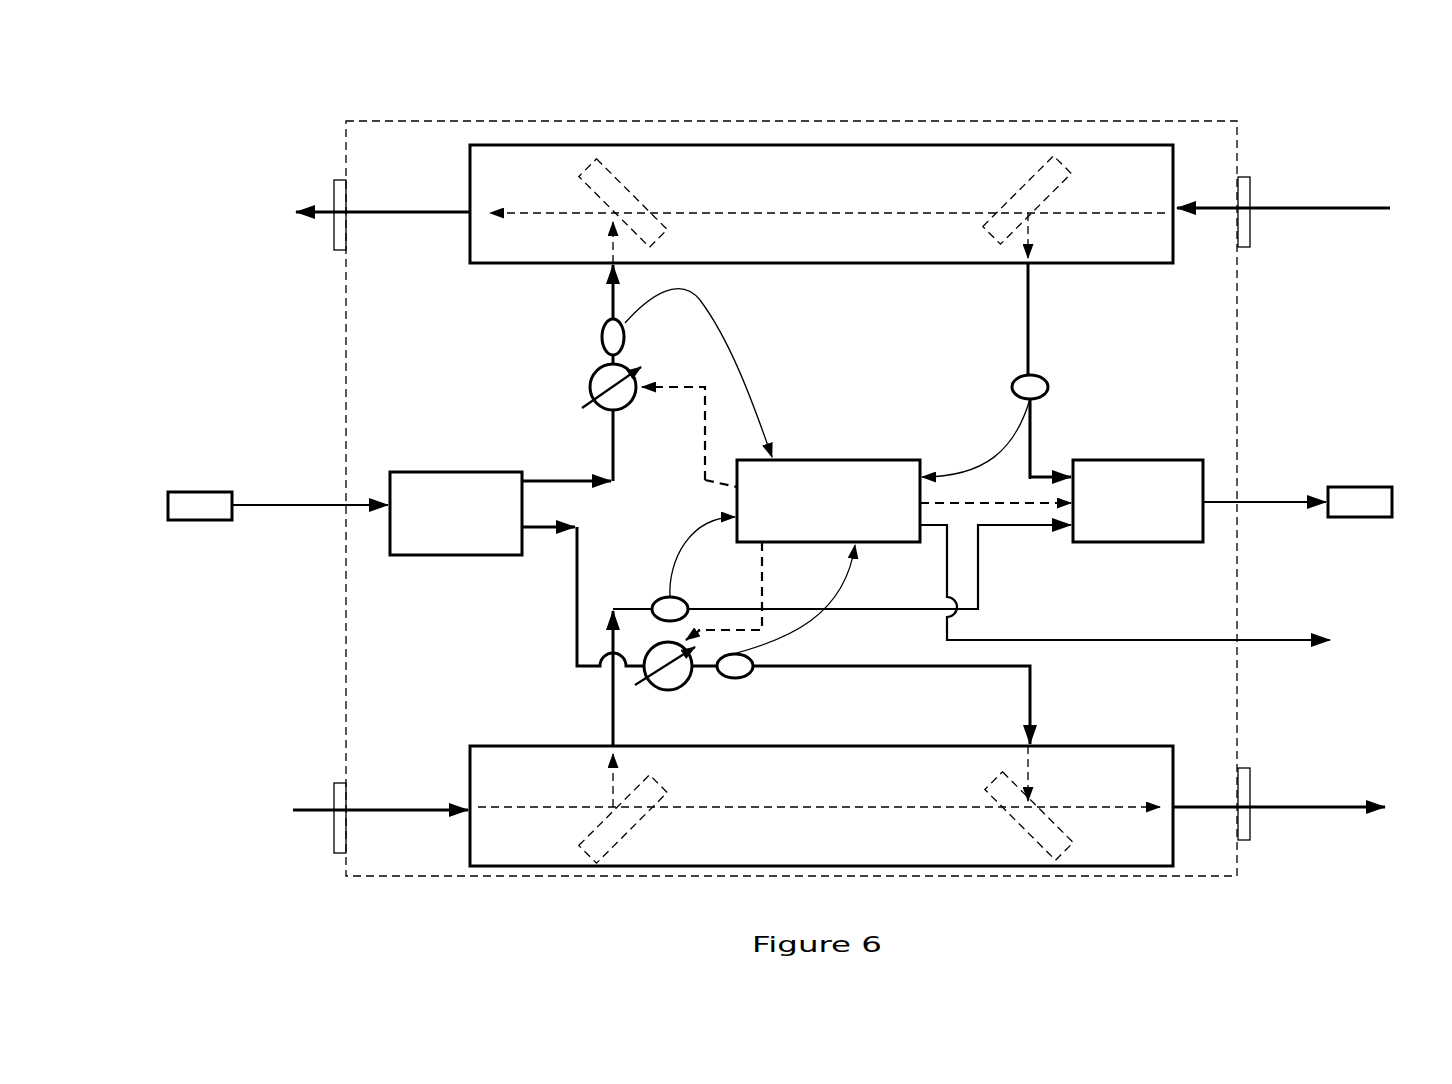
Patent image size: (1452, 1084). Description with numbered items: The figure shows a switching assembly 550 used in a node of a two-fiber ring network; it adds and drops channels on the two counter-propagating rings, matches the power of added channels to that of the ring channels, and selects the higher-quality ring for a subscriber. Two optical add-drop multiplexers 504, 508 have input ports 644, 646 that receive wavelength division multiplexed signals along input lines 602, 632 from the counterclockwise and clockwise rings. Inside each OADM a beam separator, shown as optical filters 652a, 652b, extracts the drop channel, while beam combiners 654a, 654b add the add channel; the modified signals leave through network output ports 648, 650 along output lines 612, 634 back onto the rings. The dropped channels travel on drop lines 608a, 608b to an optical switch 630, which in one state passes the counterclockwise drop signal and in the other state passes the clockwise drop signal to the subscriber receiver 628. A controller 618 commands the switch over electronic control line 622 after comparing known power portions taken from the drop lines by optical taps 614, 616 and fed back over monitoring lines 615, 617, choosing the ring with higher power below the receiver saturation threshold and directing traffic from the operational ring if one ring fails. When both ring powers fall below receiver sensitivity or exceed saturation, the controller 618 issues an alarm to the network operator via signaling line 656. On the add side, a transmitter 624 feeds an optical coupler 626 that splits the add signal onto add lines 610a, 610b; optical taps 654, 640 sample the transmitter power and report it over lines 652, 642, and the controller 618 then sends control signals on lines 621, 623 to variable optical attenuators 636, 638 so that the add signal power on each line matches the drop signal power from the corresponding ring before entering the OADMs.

The switching assembly 550 is at (575, 120).
The optical add-drop multiplexer 504 is at (1177, 141).
The optical add-drop multiplexer 508 is at (468, 868).
The output line 612 is at (413, 207).
The network output port 648 is at (333, 227).
The input line 602 is at (1313, 203).
The input port 644 is at (1250, 183).
The input line 632 is at (425, 813).
The input port 646 is at (332, 832).
The output line 634 is at (1343, 808).
The network output port 650 is at (1250, 778).
The transmitter 624 is at (203, 492).
The receiver 628 is at (1358, 487).
The optical coupler 626 is at (462, 470).
The controller 618 is at (867, 455).
The optical switch 630 is at (1190, 458).
The add line 610a is at (613, 473).
The add line 610b is at (572, 605).
The variable optical attenuator 636 is at (635, 403).
The variable optical attenuator 638 is at (688, 680).
The optical tap 654 is at (602, 333).
The optical tap 640 is at (748, 678).
The monitoring line 652 is at (733, 348).
The monitoring line 642 is at (822, 620).
The control line 621 is at (700, 482).
The control line 623 is at (762, 598).
The optical tap 616 is at (682, 597).
The monitoring line 617 is at (673, 573).
The optical tap 614 is at (1040, 373).
The monitoring line 615 is at (1000, 445).
The electronic control line 622 is at (967, 493).
The drop line 608a is at (1032, 313).
The drop line 608b is at (1010, 527).
The signaling line 656 is at (1248, 640).
The beam combiner 654a is at (637, 198).
The optical filter 652a is at (1017, 188).
The optical filter 652b is at (633, 830).
The beam combiner 654b is at (1000, 817).